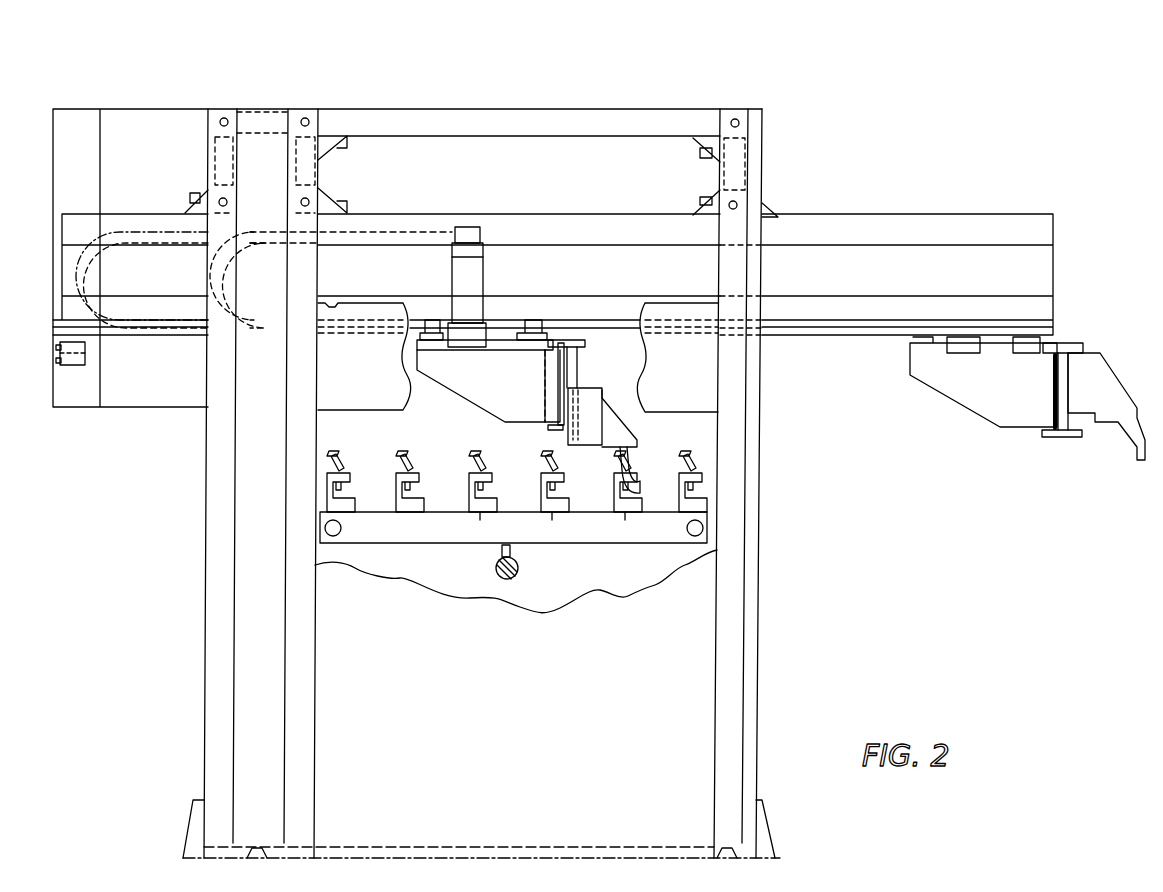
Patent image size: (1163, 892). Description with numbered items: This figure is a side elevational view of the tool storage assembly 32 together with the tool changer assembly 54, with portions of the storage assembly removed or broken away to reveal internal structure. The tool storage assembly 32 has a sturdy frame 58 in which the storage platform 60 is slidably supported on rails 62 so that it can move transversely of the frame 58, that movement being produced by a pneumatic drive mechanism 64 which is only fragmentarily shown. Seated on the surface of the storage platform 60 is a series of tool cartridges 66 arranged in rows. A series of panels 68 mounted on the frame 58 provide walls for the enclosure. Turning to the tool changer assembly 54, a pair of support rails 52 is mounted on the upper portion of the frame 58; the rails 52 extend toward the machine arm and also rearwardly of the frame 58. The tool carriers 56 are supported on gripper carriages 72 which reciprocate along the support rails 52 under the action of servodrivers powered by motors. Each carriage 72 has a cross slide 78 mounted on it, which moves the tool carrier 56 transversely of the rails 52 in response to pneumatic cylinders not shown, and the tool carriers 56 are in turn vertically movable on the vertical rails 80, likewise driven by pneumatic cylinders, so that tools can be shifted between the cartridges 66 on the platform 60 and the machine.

The tool storage assembly 32 is at (267, 113).
The support rails 52 is at (998, 218).
The tool changer assembly 54 is at (545, 275).
The tool carriers 56 is at (1090, 378).
The frame 58 is at (730, 682).
The storage platform 60 is at (640, 530).
The rails 62 is at (325, 530).
The pneumatic drive mechanism 64 is at (483, 597).
The tool cartridges 66 is at (637, 490).
The panels 68 is at (542, 673).
The gripper carriages 72 is at (498, 378).
The cross slides 78 is at (558, 430).
The vertical rails 80 is at (577, 373).